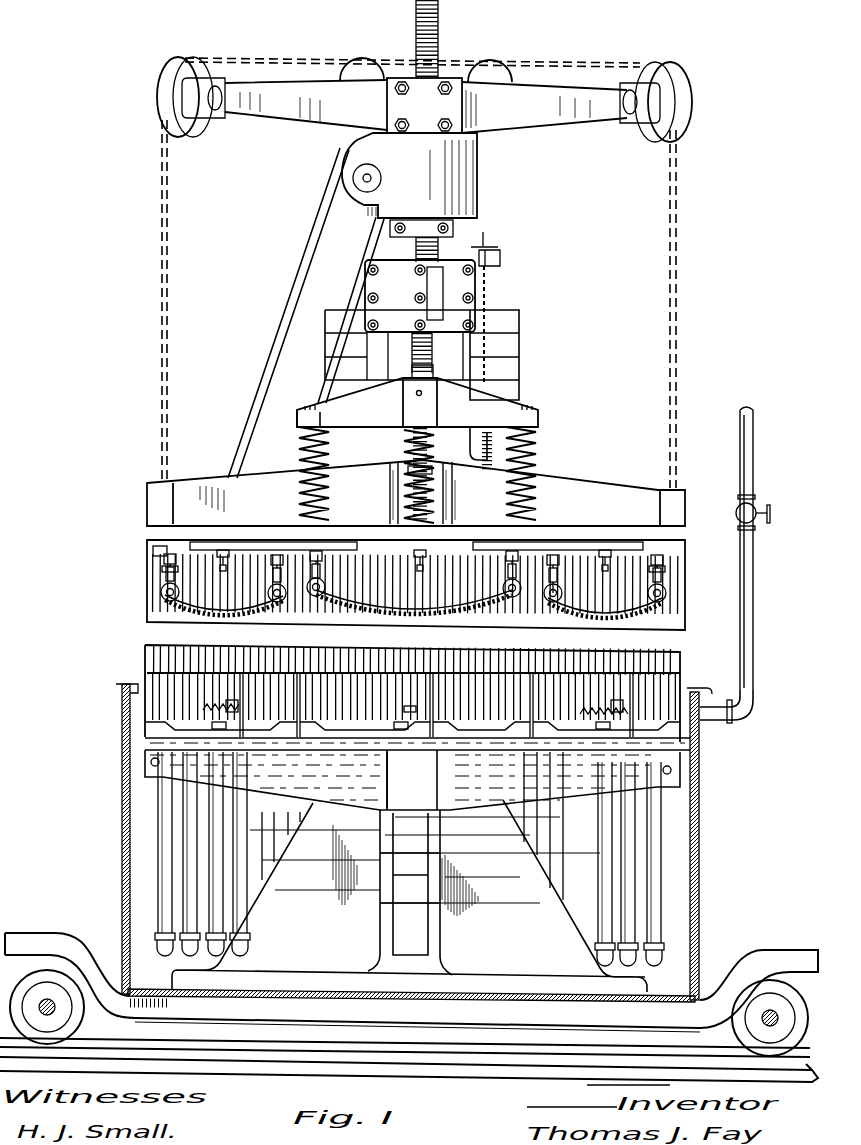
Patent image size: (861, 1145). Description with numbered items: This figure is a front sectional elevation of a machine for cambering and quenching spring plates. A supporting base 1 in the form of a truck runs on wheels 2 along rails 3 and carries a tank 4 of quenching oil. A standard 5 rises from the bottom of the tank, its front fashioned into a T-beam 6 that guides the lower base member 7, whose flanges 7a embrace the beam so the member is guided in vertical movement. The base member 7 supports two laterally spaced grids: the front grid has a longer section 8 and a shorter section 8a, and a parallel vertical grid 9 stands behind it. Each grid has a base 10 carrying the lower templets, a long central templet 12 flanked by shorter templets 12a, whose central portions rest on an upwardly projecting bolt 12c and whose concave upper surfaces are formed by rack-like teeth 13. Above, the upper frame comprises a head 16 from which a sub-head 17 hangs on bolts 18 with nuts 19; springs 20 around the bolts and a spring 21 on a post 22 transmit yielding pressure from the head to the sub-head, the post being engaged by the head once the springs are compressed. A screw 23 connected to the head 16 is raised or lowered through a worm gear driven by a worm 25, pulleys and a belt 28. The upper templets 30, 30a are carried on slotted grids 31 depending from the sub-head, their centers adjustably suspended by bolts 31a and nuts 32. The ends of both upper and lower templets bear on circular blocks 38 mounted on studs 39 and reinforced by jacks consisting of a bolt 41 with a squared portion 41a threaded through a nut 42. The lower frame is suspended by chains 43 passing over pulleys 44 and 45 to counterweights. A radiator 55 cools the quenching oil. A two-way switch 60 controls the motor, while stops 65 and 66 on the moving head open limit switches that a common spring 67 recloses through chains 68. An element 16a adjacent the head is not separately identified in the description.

The supporting base 1 is at (571, 1018).
The wheels 2 is at (409, 1013).
The rails 3 is at (503, 1068).
The tank 4 is at (700, 893).
The standard 5 is at (409, 896).
The T-beam 6 is at (410, 892).
The base member 7 is at (417, 827).
The flanges 7a is at (386, 768).
The grid section 8 is at (432, 708).
The grid section 8a is at (245, 714).
The vertical grid 9 is at (150, 650).
The grid base 10 is at (513, 731).
The lower templet 12 is at (408, 714).
The lower templet 12a is at (232, 714).
The bolt 12c is at (216, 730).
The transverse teeth or ribs 13 is at (263, 614).
The head 16 is at (417, 402).
The guide plate 16a is at (507, 350).
The sub-head 17 is at (436, 493).
The bolts 18 is at (297, 482).
The nuts 19 is at (307, 404).
The springs 20 is at (300, 444).
The spring 21 is at (410, 473).
The post 22 is at (404, 458).
The screw 23 is at (440, 18).
The worm 25 is at (365, 182).
The belt 28 is at (263, 375).
The upper templet 30 is at (407, 620).
The upper templet 30a is at (413, 623).
The grids 31 is at (400, 580).
The bolts 31a is at (224, 576).
The nuts 32 is at (416, 527).
The blocks 38 is at (168, 603).
The studs 39 is at (553, 606).
The jack bolt 41 is at (170, 590).
The squared portion 41a is at (165, 572).
The nut 42 is at (165, 552).
The chains 43 is at (168, 283).
The pulleys 44 is at (162, 115).
The pulleys 45 is at (360, 63).
The radiator 55 is at (663, 833).
The two-way electric switch 60 is at (420, 296).
The stop 65 is at (495, 245).
The stop 66 is at (490, 447).
The spring 67 is at (505, 390).
The chains 68 is at (486, 304).